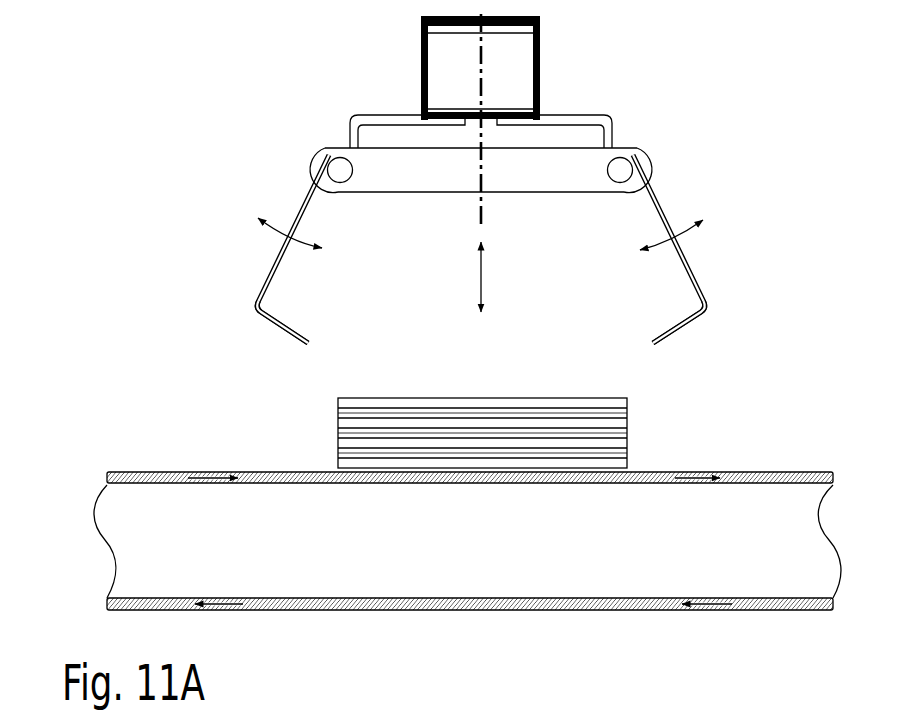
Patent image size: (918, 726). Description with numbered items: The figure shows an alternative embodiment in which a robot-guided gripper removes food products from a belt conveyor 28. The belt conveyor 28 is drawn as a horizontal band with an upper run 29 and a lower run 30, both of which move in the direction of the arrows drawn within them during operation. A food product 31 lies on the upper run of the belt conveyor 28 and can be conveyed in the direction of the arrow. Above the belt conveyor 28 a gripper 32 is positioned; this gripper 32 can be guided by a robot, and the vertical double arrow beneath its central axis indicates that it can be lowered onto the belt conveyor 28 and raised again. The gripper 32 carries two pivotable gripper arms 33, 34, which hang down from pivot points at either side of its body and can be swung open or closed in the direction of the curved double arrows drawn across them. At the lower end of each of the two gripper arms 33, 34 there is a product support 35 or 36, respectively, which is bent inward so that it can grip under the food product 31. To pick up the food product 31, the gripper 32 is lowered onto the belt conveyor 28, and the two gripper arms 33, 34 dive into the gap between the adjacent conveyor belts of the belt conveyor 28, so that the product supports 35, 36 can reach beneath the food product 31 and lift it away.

The belt conveyor 28 is at (467, 530).
The upper run 29 is at (152, 471).
The lower run 30 is at (438, 606).
The food product 31 is at (426, 395).
The gripper 32 is at (444, 193).
The gripper arm 33 is at (266, 258).
The gripper arm 34 is at (697, 263).
The product support 35 is at (282, 336).
The product support 36 is at (673, 340).